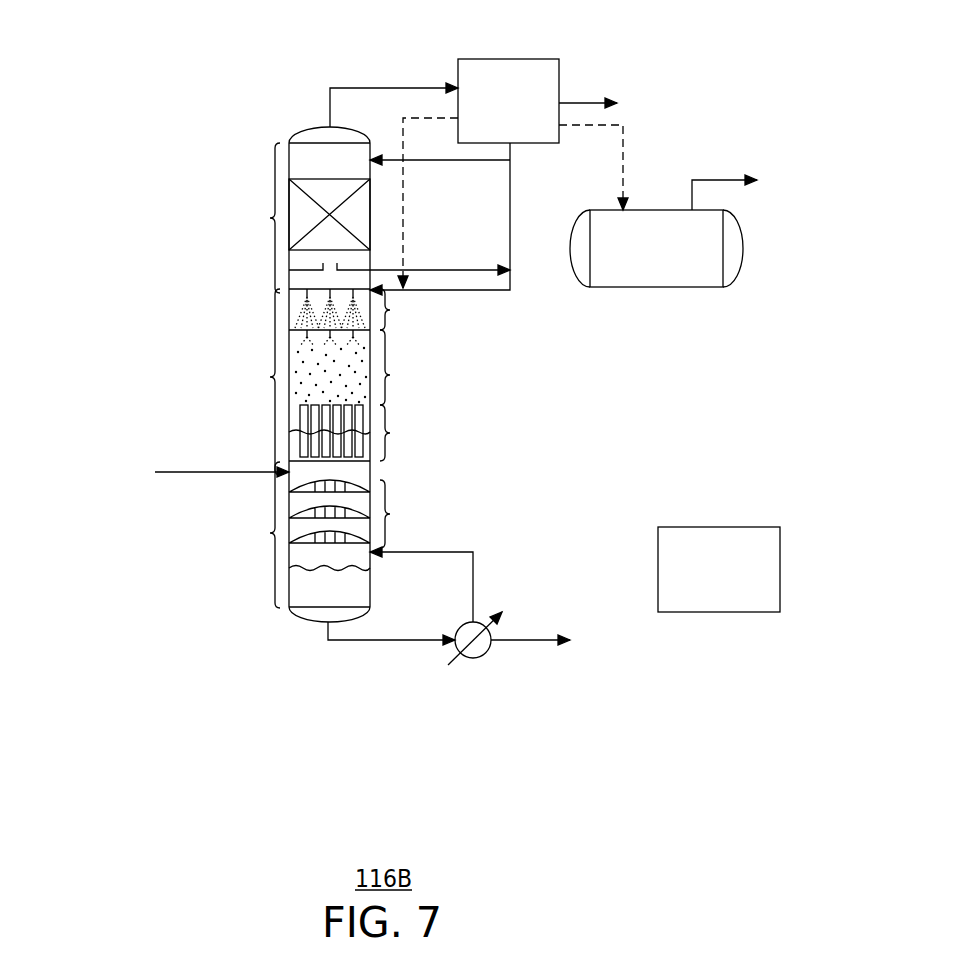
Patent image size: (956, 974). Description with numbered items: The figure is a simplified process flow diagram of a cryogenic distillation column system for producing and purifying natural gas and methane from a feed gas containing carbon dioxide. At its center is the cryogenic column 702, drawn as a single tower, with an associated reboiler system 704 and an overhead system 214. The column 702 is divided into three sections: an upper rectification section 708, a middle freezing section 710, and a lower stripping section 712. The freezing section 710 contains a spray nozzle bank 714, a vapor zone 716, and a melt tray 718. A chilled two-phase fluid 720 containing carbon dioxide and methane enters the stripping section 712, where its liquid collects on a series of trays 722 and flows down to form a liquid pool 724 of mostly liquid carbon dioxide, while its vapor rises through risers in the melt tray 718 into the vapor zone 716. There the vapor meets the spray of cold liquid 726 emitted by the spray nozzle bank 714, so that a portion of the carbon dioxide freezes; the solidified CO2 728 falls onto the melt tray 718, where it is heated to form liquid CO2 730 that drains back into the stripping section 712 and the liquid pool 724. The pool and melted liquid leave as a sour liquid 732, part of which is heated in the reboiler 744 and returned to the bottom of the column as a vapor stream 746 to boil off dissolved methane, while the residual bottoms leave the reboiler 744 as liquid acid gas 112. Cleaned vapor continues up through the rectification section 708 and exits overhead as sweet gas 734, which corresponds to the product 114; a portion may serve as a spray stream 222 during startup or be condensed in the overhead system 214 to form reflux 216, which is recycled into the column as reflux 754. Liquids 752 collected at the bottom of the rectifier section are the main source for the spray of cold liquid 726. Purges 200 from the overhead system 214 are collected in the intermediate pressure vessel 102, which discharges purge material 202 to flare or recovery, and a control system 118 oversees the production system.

The cryogenic column 702 is at (252, 182).
The rectification section 708 is at (292, 218).
The freezing section 710 is at (291, 382).
The stripping section 712 is at (247, 535).
The spray nozzle bank 714 is at (368, 311).
The vapor zone 716 is at (413, 367).
The melt tray 718 is at (413, 433).
The chilled two-phase fluid 720 is at (188, 470).
The trays 722 is at (370, 514).
The liquid pool 724 is at (313, 590).
The spray of cold liquid 726 is at (300, 320).
The solidified CO2 728 is at (315, 377).
The liquid CO2 730 is at (358, 450).
The sour liquid 732 is at (392, 642).
The sweet gas 734 is at (350, 87).
The reboiler 744 is at (483, 658).
The vapor stream 746 is at (457, 550).
The liquids 752 is at (483, 267).
The reflux 754 is at (493, 162).
The reboiler system 704 is at (523, 568).
The liquid acid gas 112 is at (528, 637).
The product 114 is at (587, 100).
The control system 118 is at (699, 581).
The purges 200 is at (625, 133).
The purge material 202 is at (703, 173).
The overhead system 214 is at (538, 58).
The reflux 216 is at (510, 183).
The spray stream 222 is at (404, 240).
The intermediate pressure vessel 102 is at (647, 288).